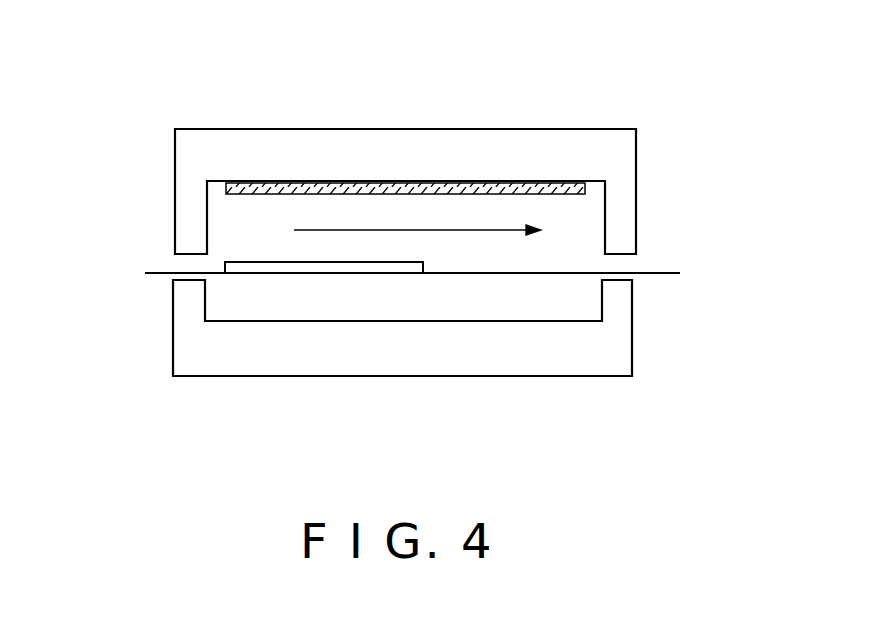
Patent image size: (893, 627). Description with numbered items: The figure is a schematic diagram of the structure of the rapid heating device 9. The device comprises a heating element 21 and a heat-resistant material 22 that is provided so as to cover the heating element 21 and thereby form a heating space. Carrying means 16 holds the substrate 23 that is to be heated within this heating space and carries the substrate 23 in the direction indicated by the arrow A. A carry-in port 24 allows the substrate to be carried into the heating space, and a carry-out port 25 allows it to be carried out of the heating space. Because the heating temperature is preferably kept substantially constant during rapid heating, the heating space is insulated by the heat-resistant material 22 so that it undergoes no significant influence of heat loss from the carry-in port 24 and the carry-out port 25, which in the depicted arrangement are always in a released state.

The rapid heating device 9 is at (687, 90).
The carrying means 16 is at (502, 273).
The heating element 21 is at (272, 180).
The heat-resistant material 22 is at (619, 162).
The substrate 23 is at (342, 265).
The carry-in port 24 is at (172, 263).
The carry-out port 25 is at (627, 265).